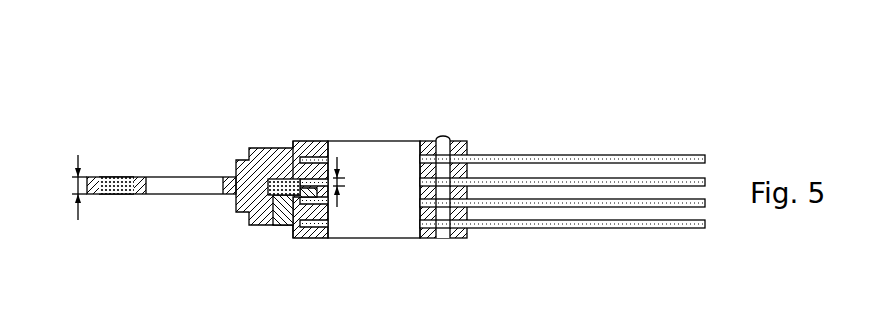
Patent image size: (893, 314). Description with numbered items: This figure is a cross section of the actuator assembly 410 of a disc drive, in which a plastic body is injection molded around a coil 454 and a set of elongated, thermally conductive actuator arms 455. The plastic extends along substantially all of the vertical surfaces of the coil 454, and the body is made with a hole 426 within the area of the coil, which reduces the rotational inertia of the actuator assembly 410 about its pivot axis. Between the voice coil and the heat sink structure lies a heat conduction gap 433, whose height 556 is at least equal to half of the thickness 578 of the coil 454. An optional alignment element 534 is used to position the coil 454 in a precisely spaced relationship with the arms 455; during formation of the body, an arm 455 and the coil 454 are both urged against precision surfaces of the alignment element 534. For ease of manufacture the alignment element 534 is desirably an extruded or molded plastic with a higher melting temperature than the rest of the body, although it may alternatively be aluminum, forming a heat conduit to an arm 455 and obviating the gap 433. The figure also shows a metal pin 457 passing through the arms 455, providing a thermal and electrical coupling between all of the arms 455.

The actuator assembly 410 is at (337, 112).
The hole 426 is at (167, 183).
The gap 433 is at (296, 175).
The coil 454 is at (118, 196).
The actuator arms 455 is at (500, 158).
The metal pin 457 is at (443, 228).
The alignment element 534 is at (285, 222).
The height 556 is at (345, 183).
The thickness 578 is at (62, 187).